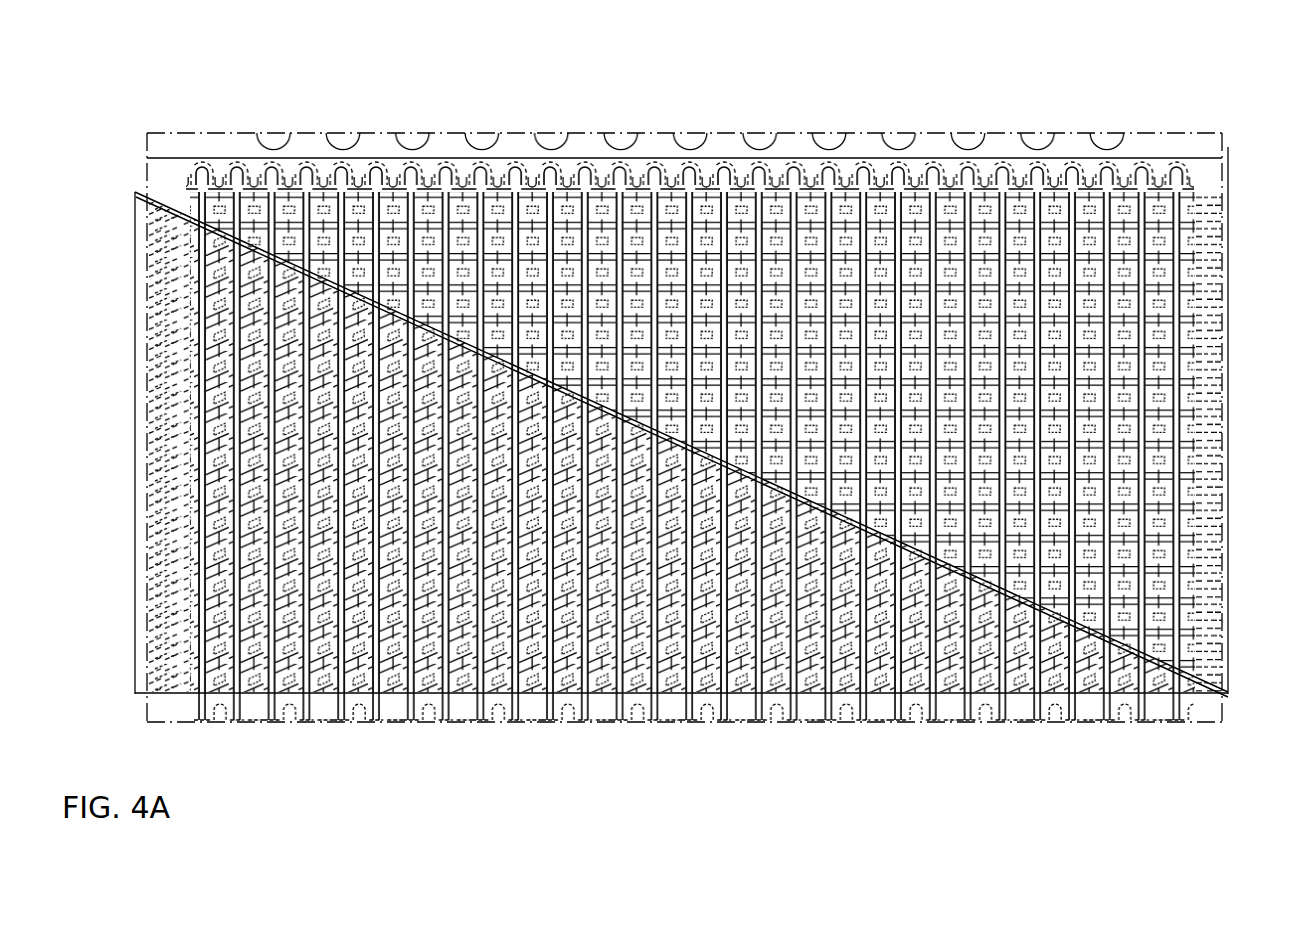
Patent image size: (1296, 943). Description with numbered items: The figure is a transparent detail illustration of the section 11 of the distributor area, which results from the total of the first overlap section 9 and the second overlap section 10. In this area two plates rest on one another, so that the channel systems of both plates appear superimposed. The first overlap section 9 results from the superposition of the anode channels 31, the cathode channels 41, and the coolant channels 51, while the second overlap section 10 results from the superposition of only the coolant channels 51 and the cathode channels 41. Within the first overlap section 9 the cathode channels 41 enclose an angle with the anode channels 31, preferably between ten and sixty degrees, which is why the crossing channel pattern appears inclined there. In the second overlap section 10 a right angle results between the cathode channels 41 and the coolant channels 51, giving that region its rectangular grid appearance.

The section 11 is at (1097, 104).
The second overlap section 10 is at (1229, 167).
The first overlap section 9 is at (134, 641).
The cathode channels 41 is at (985, 171).
The coolant channels 51 is at (1208, 257).
The anode channels 31 is at (153, 600).